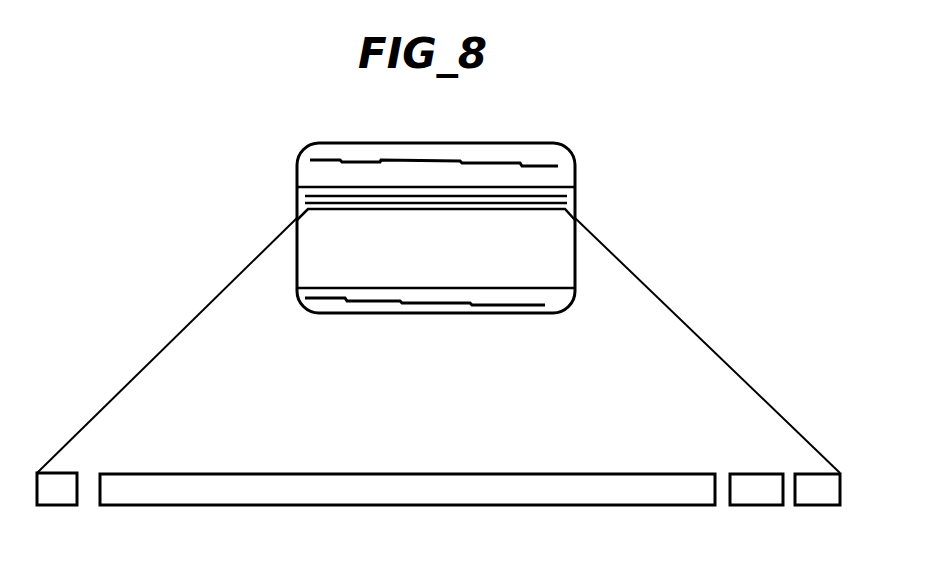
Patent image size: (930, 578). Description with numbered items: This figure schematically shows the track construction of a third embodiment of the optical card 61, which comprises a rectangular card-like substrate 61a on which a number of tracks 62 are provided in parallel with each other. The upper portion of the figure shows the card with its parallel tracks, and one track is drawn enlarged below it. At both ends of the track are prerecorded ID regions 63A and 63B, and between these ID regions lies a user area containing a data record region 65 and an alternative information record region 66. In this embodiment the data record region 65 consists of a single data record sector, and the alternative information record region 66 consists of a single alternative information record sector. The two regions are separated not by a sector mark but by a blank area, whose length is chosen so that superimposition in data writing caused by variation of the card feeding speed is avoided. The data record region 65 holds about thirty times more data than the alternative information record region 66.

The optical card 61 is at (480, 141).
The card-like substrate 61a is at (418, 152).
The tracks 62 is at (553, 200).
The prerecorded ID region 63A is at (57, 490).
The prerecorded ID region 63B is at (818, 493).
The data record region 65 is at (375, 474).
The alternative information record region 66 is at (757, 480).